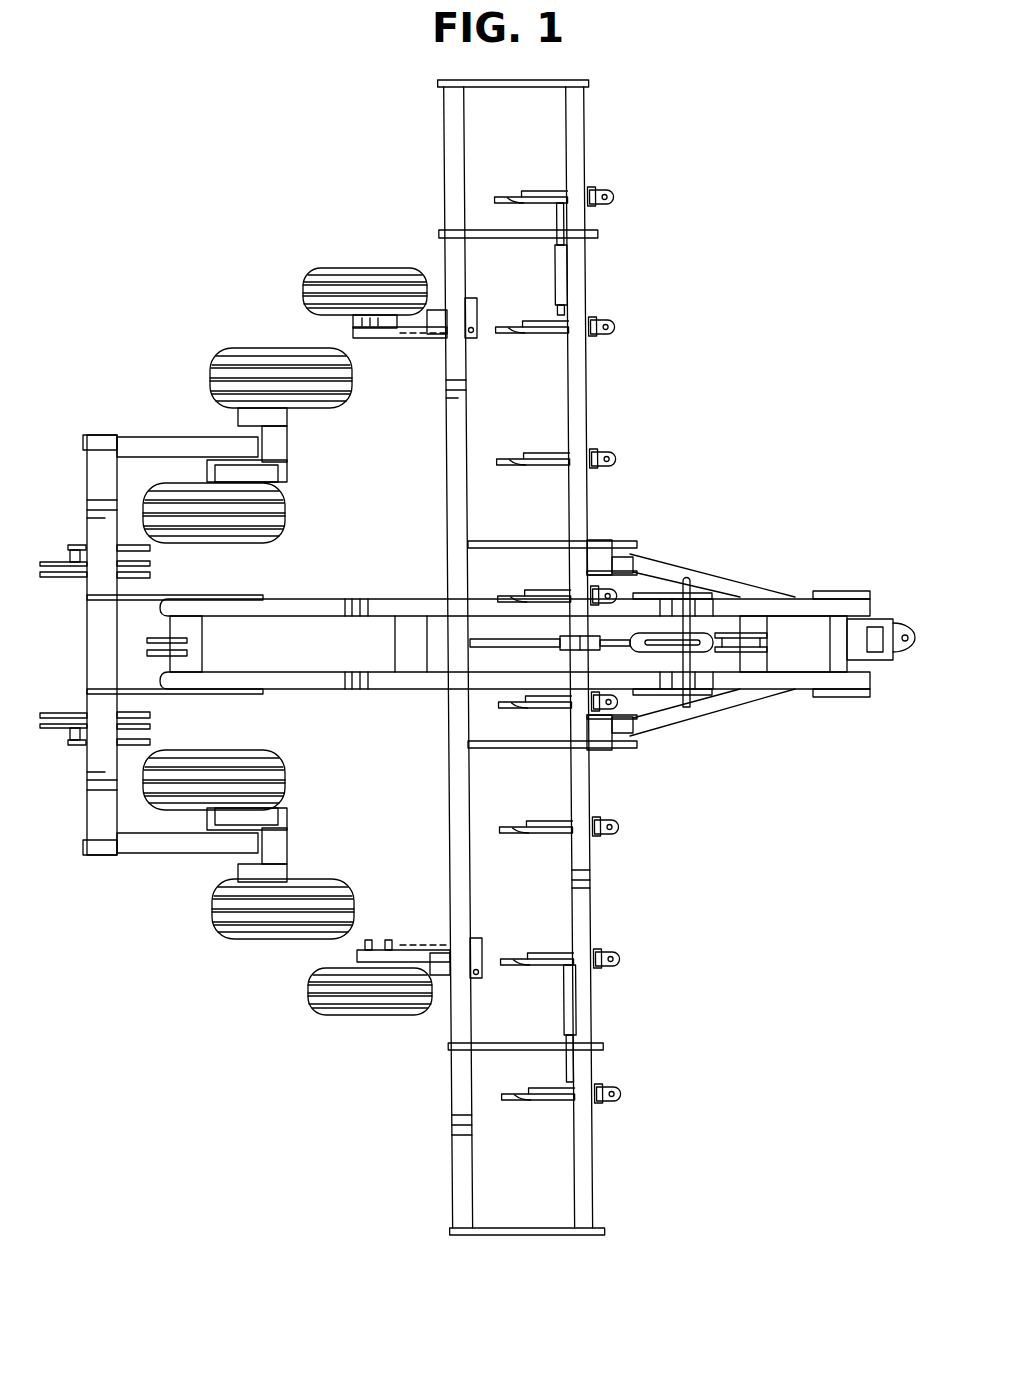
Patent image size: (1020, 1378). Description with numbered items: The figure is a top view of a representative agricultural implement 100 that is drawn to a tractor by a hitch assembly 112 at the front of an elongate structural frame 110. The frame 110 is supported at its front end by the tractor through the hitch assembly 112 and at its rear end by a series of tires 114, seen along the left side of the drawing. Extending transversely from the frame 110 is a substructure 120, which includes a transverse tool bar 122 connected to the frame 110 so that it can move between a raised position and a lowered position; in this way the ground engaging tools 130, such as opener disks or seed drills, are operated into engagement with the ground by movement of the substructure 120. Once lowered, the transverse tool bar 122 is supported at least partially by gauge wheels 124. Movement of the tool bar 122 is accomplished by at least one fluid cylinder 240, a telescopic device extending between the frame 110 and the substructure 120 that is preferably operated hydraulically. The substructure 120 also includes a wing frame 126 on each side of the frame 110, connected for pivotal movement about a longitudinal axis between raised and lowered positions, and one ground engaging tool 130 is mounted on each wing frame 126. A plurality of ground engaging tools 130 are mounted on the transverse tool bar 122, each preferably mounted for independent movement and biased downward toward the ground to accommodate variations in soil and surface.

The agricultural implement 100 is at (750, 378).
The elongate structural frame 110 is at (314, 598).
The hitch assembly 112 is at (907, 622).
The tires 114 is at (215, 352).
The substructure 120 is at (662, 506).
The transverse tool bar 122 is at (592, 408).
The gauge wheels 124 is at (317, 1013).
The wing frame 126 is at (588, 160).
The ground engaging tool 130 is at (516, 950).
The fluid cylinder 240 is at (560, 272).